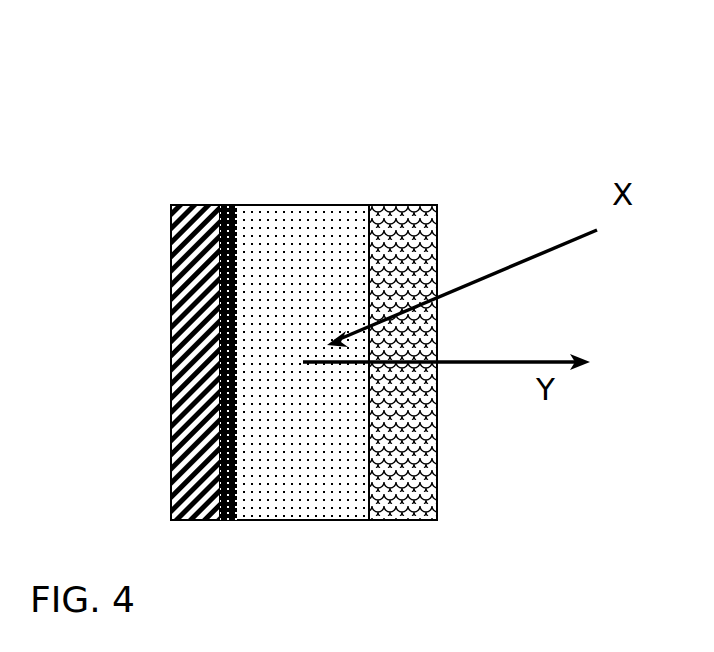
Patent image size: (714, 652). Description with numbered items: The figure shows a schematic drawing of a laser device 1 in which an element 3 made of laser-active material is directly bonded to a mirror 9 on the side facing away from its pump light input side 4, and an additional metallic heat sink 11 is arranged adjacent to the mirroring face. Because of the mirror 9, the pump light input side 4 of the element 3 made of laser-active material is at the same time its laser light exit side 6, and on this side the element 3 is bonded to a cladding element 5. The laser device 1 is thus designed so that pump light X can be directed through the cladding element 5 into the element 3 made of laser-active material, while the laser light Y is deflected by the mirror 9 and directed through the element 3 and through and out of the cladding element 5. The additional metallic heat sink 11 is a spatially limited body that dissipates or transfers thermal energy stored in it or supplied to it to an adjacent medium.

The laser device 1 is at (442, 134).
The element made of laser-active material 3 is at (306, 205).
The pump light input side 4 is at (373, 450).
The cladding element 5 is at (412, 205).
The laser light exit side 6 is at (391, 518).
The mirror 9 is at (232, 205).
The additional metallic heat sink 11 is at (193, 205).